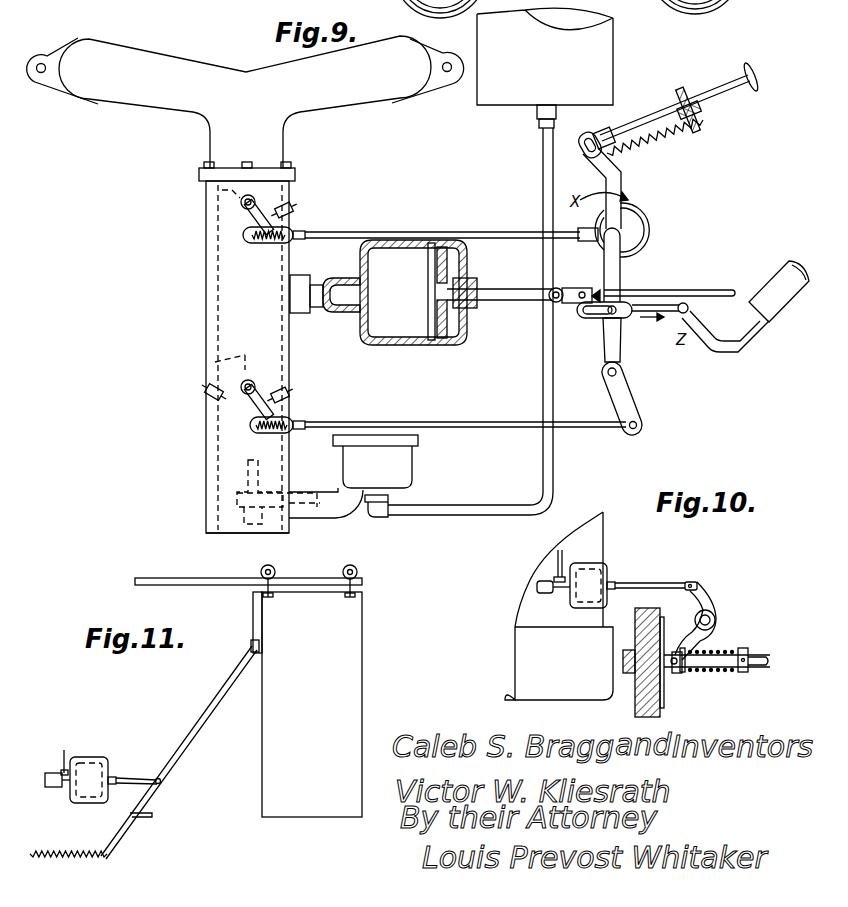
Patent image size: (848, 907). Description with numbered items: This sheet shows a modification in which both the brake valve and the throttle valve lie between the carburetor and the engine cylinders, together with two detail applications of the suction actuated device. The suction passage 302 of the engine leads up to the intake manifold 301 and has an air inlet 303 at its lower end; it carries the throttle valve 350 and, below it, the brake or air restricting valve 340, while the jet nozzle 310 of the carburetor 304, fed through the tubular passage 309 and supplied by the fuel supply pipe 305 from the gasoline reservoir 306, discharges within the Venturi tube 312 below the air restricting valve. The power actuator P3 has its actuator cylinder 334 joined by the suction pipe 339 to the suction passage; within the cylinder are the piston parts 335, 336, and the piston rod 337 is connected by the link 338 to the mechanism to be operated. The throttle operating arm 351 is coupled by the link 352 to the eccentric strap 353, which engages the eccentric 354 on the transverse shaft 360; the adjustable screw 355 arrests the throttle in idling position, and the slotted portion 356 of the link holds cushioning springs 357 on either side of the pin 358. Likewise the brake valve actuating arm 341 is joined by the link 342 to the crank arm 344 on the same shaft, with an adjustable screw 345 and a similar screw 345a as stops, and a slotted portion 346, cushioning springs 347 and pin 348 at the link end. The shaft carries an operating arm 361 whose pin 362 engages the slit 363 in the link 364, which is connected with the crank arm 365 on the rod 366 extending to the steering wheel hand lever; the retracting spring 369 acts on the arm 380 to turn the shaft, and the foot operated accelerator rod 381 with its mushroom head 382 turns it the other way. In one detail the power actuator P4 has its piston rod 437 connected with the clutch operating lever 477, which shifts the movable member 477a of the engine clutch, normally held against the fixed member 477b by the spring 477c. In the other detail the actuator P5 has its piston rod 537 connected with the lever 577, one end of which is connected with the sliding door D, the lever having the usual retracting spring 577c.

In FIG. 9, the steering yoke 301 is at (237, 63).
In FIG. 9, the valve housing 302 is at (212, 289).
In FIG. 9, the housing bottom 303 is at (251, 534).
In FIG. 9, the reservoir 304 is at (395, 468).
In FIG. 9, the pipe 305 is at (543, 463).
In FIG. 9, the tank 306 is at (600, 67).
In FIG. 9, the pipe 309 is at (328, 516).
In FIG. 9, the valve 310 is at (240, 480).
In FIG. 9, the valve stem 312 is at (218, 463).
In FIG. 9, the power cylinder 334 is at (378, 345).
In FIG. 9, the piston 335 is at (463, 258).
In FIG. 9, the piston ring 336 is at (448, 323).
In FIG. 9, the piston rod 337 is at (515, 282).
In FIG. 9, the handle 338 is at (774, 292).
In FIG. 9, the inlet 339 is at (335, 312).
In FIG. 9, the valve stem 340 is at (215, 362).
In FIG. 9, the lever 341 is at (246, 412).
In FIG. 9, the rod 342 is at (490, 413).
In FIG. 9, the lever 344 is at (628, 402).
In FIG. 9, the adjusting nut 345 is at (290, 398).
In FIG. 9, the adjusting nut 345a is at (206, 398).
In FIG. 9, the spring housing 346 is at (254, 432).
In FIG. 9, the spring 347 is at (258, 408).
In FIG. 9, the rod end 348 is at (288, 426).
In FIG. 9, the valve 350 is at (221, 193).
In FIG. 9, the lever 351 is at (262, 217).
In FIG. 9, the rod 352 is at (522, 233).
In FIG. 9, the crank 353 is at (648, 250).
In FIG. 9, the ring 354 is at (636, 230).
In FIG. 9, the adjusting nut 355 is at (291, 211).
In FIG. 9, the spring 356 is at (245, 237).
In FIG. 9, the spring housing 357 is at (278, 245).
In FIG. 9, the rod end 358 is at (290, 237).
In FIG. 9, the rod 360 is at (621, 278).
In FIG. 9, the link 361 is at (605, 338).
In FIG. 9, the pivot 362 is at (616, 314).
In FIG. 9, the slotted slide 363 is at (585, 323).
In FIG. 9, the rod 364 is at (662, 306).
In FIG. 9, the rod 365 is at (697, 338).
In FIG. 9, the bent rod 366 is at (753, 342).
In FIG. 9, the spring 369 is at (665, 138).
In FIG. 9, the eye 380 is at (598, 175).
In FIG. 9, the shaft 381 is at (624, 132).
In FIG. 9, the knob 382 is at (759, 80).
In FIG. 9, the piston P3 is at (420, 345).
In FIG. 10, the power unit P4 is at (590, 565).
In FIG. 10, the rod 437 is at (648, 580).
In FIG. 10, the lever 477 is at (708, 603).
In FIG. 10, the spindle 477a is at (717, 677).
In FIG. 10, the disk 477b is at (640, 702).
In FIG. 10, the pin 477c is at (705, 652).
In FIG. 11, the power unit P5 is at (76, 770).
In FIG. 11, the rod 537 is at (134, 773).
In FIG. 11, the arm 577 is at (207, 706).
In FIG. 11, the ground 577c is at (72, 845).
In FIG. 11, the door D is at (307, 704).